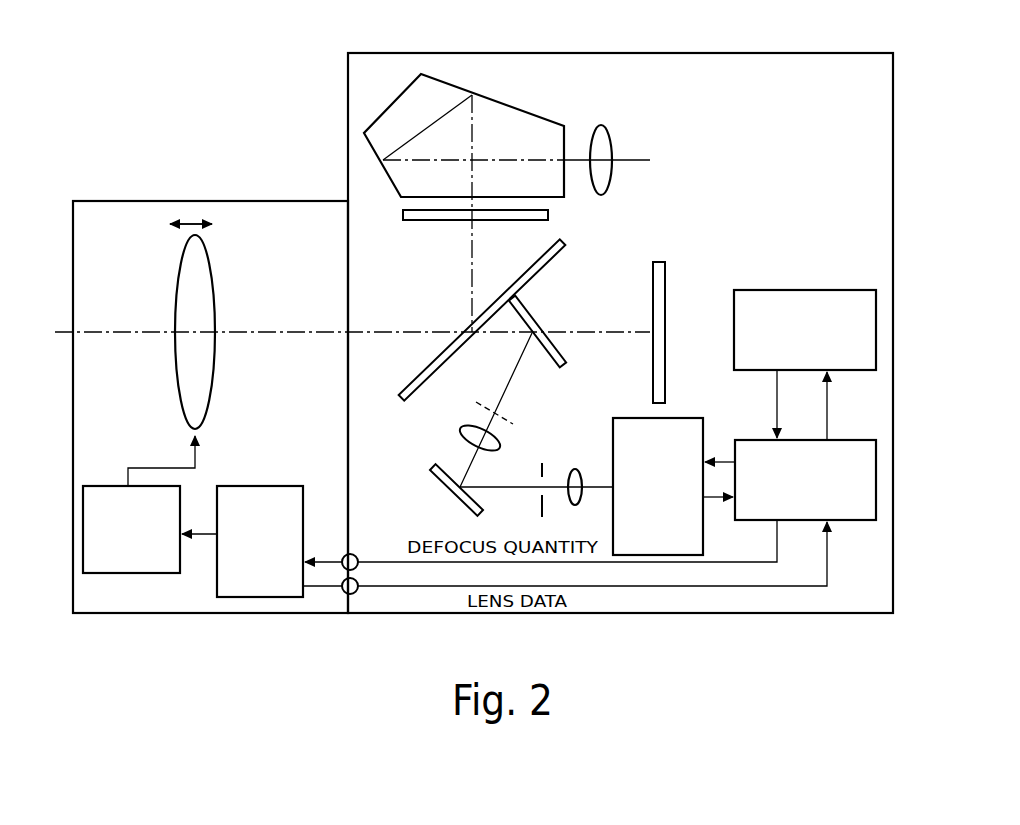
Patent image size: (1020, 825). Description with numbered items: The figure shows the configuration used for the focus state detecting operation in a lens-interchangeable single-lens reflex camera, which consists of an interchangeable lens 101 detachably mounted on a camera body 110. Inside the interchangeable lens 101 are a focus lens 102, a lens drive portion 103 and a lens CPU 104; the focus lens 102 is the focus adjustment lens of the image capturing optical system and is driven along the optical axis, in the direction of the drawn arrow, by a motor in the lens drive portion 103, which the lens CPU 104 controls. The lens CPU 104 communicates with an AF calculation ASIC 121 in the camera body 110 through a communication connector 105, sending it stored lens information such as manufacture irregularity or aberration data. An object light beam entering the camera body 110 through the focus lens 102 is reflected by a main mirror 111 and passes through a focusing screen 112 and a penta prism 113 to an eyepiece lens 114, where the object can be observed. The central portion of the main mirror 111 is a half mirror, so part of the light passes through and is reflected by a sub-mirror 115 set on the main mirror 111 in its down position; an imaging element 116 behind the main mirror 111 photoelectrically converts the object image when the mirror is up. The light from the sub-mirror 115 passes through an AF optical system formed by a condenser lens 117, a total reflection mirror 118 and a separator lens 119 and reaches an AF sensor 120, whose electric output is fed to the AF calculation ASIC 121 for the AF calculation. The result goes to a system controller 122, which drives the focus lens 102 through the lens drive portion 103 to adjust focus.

The interchangeable lens 101 is at (237, 201).
The focus lens 102 is at (213, 285).
The lens drive portion 103 is at (103, 485).
The lens CPU 104 is at (270, 485).
The communication connector 105 is at (358, 581).
The camera body 110 is at (668, 52).
The main mirror 111 is at (469, 329).
The focusing screen 112 is at (548, 216).
The penta prism 113 is at (524, 109).
The eyepiece lens 114 is at (613, 145).
The sub-mirror 115 is at (542, 316).
The imaging element 116 is at (661, 261).
The condenser lens 117 is at (493, 439).
The total reflection mirror 118 is at (433, 467).
The separator lens 119 is at (577, 470).
The AF sensor 120 is at (692, 417).
The AF calculation ASIC 121 is at (855, 439).
The system controller 122 is at (830, 289).